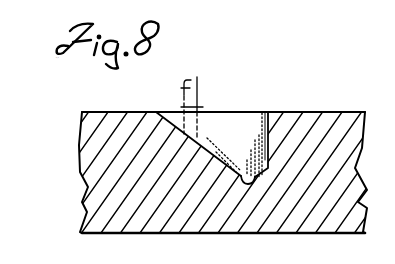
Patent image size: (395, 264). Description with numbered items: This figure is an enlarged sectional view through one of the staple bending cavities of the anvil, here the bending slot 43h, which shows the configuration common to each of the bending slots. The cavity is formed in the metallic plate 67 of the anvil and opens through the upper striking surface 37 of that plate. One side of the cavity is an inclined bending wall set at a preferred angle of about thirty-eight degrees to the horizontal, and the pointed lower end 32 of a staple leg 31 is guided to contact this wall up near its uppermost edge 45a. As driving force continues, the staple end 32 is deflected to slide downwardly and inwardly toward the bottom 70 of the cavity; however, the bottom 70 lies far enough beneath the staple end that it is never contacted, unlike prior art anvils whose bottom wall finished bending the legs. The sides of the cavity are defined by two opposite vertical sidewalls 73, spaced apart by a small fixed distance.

The staple legs 31 is at (182, 91).
The uppermost edge of inclined wall 45a is at (164, 113).
The bending slot 43h is at (219, 101).
The vertical sidewalls 73 is at (247, 128).
The upper striking surface 37 is at (353, 77).
The pointed lower ends of staple 32 is at (185, 134).
The metallic plate 67 is at (110, 197).
The bottom of anvil cavity 70 is at (243, 183).